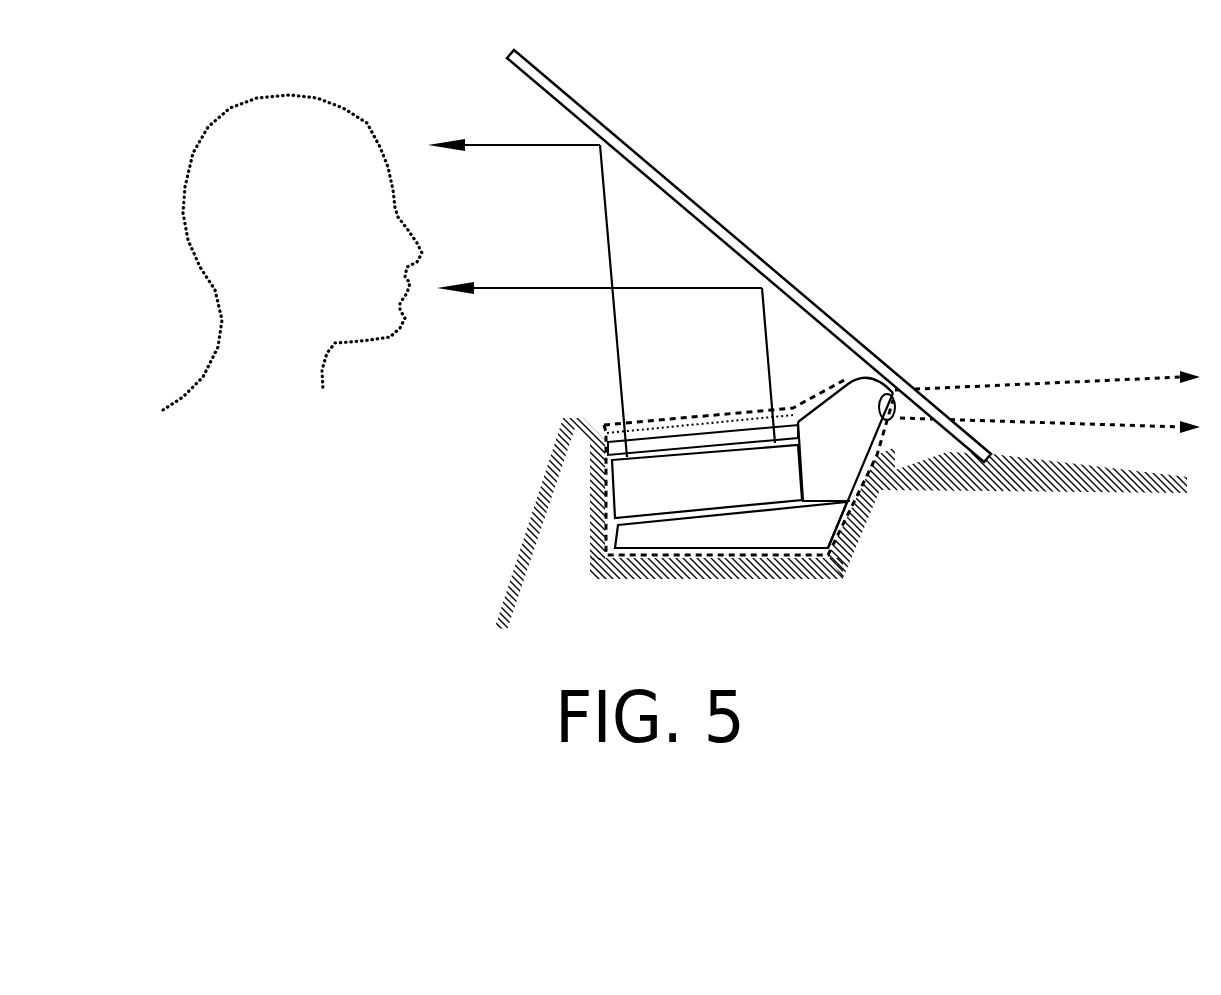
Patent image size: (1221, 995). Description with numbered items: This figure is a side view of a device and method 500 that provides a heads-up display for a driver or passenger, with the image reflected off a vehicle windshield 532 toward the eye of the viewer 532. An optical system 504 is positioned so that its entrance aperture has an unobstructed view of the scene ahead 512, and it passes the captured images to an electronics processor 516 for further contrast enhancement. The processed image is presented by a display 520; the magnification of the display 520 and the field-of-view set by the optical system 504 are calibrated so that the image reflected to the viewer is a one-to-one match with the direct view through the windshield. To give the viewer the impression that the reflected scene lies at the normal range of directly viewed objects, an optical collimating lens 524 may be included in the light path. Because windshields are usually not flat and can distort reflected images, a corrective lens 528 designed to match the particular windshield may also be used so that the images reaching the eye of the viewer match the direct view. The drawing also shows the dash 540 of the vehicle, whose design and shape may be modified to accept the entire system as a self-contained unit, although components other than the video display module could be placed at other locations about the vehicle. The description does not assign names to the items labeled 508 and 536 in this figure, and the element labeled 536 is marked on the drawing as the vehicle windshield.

The device and method 500 is at (810, 558).
The optical system 504 is at (852, 383).
The lens 508 is at (897, 387).
The scene ahead 512 is at (1035, 382).
The electronics processor 516 is at (845, 514).
The display 520 is at (607, 498).
The optical collimating lens 524 is at (612, 453).
The corrective lens 528 is at (657, 427).
The vehicle windshield 532 is at (496, 144).
The vehicle windshield 536 is at (638, 153).
The dash 540 is at (685, 577).